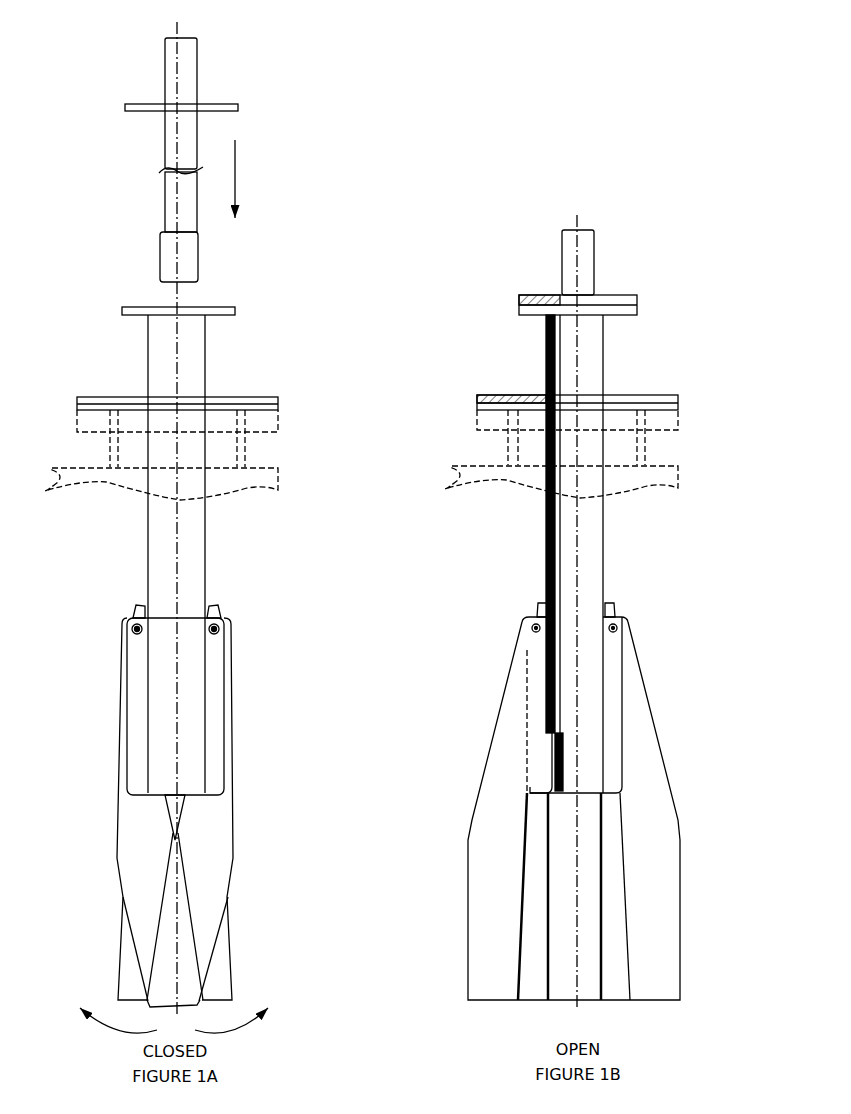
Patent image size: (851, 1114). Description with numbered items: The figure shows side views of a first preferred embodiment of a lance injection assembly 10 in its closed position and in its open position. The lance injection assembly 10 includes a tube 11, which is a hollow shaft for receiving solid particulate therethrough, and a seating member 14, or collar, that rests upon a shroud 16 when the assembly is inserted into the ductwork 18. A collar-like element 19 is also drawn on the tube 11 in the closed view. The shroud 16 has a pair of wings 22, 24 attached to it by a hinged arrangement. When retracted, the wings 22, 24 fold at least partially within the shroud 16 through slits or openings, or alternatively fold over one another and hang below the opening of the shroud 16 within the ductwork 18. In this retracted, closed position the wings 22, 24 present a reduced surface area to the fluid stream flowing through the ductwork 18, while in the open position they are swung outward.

In FIG. 1B, the lance injection assembly 10 is at (588, 607).
In FIG. 1A, the tube 11 is at (119, 135).
In FIG. 1A, the seating member 14 is at (240, 73).
In FIG. 1A, the shroud 16 is at (240, 529).
In FIG. 1B, the shroud 16 is at (496, 554).
In FIG. 1A, the ductwork 18 is at (229, 407).
In FIG. 1A, the collar 19 is at (245, 240).
In FIG. 1A, the wing 22 is at (107, 806).
In FIG. 1B, the wing 22 is at (468, 801).
In FIG. 1A, the wing 24 is at (240, 803).
In FIG. 1B, the wing 24 is at (652, 801).